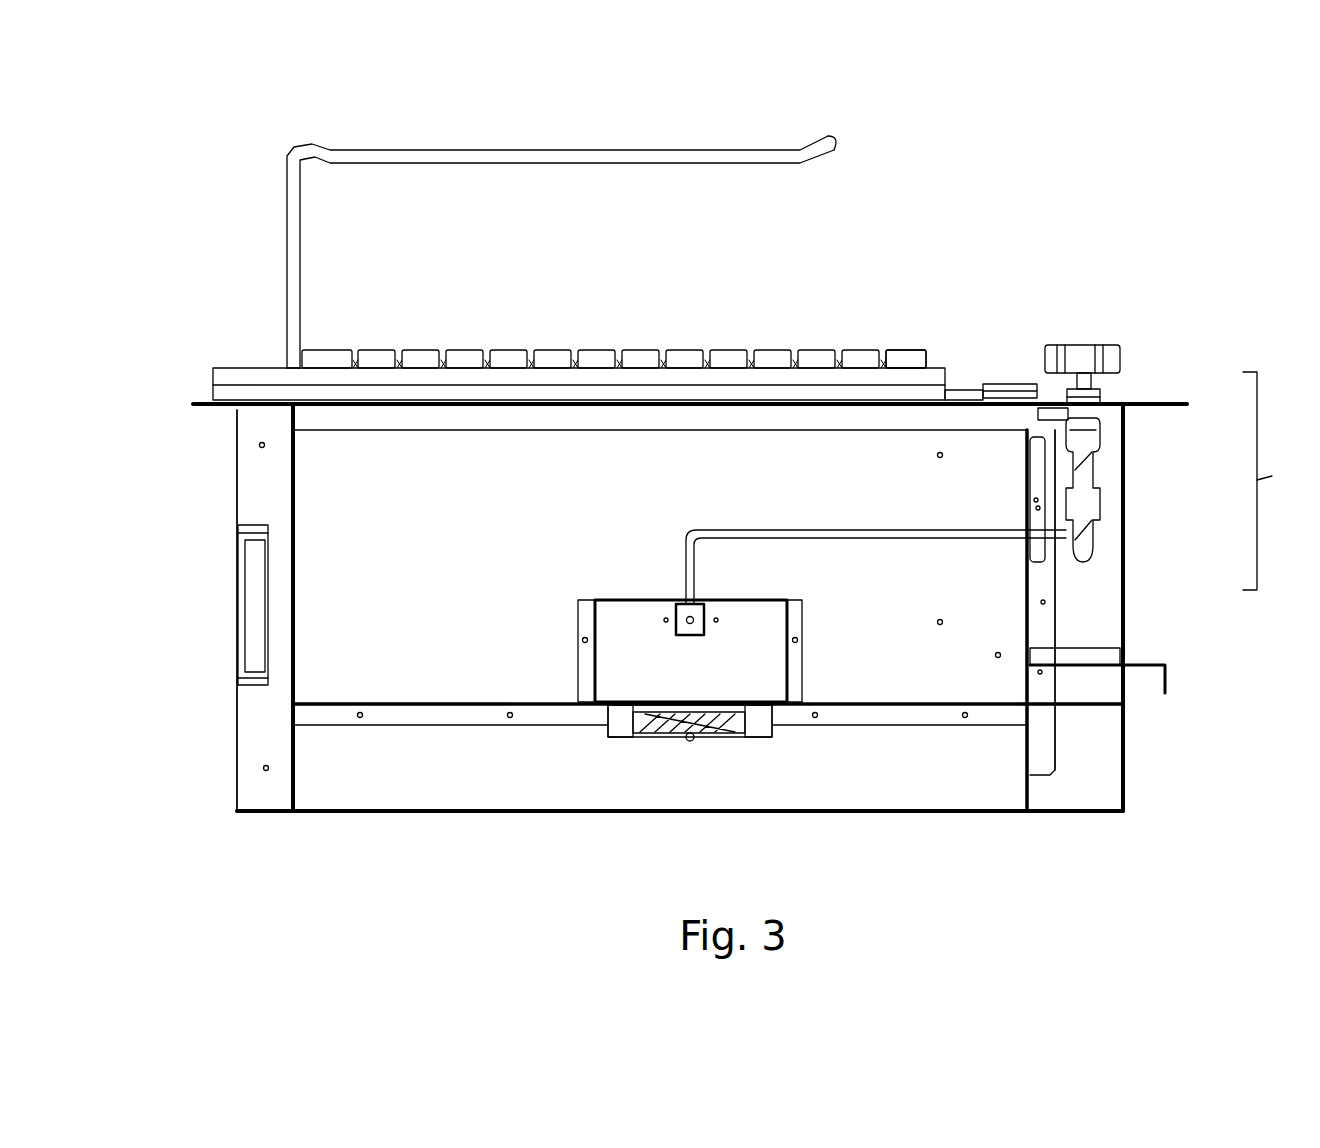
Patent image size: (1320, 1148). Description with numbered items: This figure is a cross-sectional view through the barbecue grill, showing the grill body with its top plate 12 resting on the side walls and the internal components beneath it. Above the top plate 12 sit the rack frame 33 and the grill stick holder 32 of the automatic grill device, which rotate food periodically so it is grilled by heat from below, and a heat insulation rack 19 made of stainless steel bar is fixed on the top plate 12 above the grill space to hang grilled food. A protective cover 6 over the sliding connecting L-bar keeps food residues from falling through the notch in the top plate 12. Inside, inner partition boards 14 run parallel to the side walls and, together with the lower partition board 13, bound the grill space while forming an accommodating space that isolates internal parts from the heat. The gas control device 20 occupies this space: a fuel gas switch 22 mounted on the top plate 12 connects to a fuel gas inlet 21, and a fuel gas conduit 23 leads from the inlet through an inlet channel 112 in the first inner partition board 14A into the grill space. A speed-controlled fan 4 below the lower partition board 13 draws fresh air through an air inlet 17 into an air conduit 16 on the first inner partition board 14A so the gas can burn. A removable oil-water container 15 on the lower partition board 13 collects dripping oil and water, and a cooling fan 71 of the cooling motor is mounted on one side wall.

The heat insulation rack 19 is at (740, 158).
The rack frame 33 is at (227, 378).
The grill stick holder 32 is at (918, 352).
The top plate 12 is at (208, 412).
The protective cover 6 is at (1129, 344).
The fuel gas switch 22 is at (1120, 365).
The fuel gas inlet 21 is at (1100, 512).
The gas control device 20 is at (1281, 481).
The fuel gas conduit 23 is at (965, 567).
The inlet channel 112 is at (676, 604).
The first inner partition board 14A is at (355, 548).
The air conduit 16 is at (585, 650).
The cooling fan 71 is at (255, 610).
The inner partition boards 14 is at (679, 610).
The lower partition board 13 is at (600, 737).
The air inlet 17 is at (593, 783).
The speed-controlled fan 4 is at (788, 786).
The oil-water container 15 is at (1168, 680).